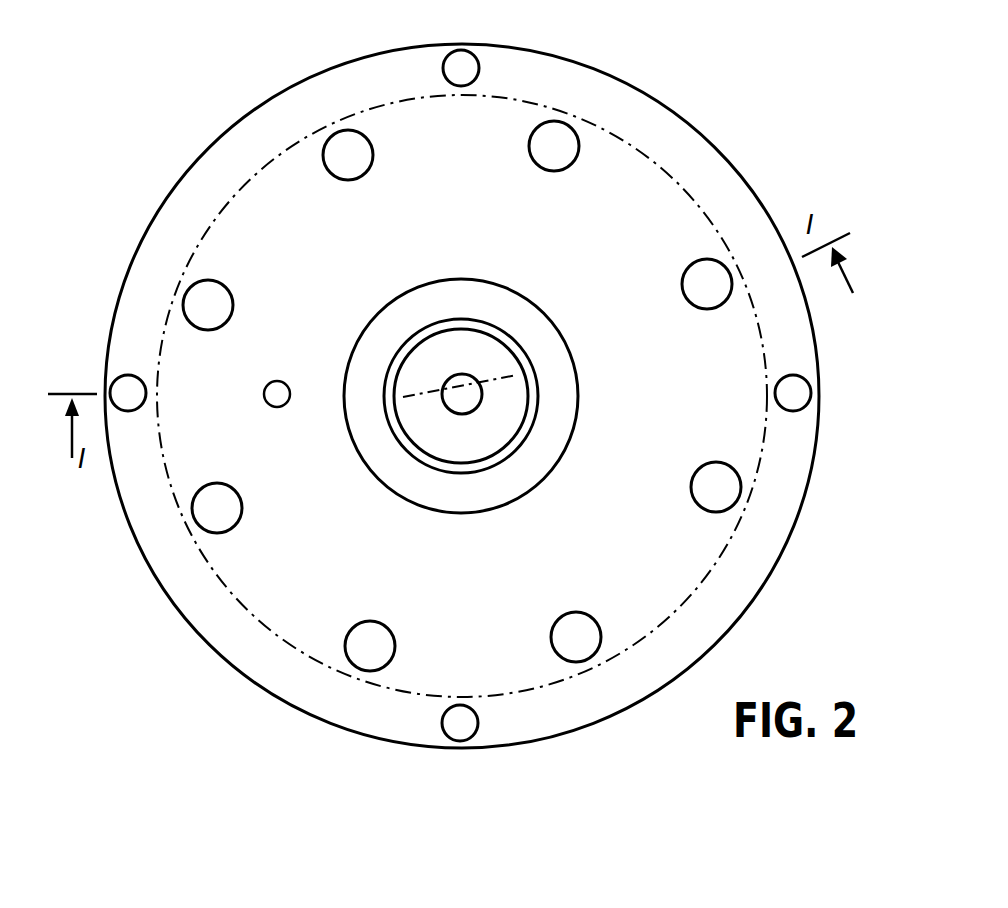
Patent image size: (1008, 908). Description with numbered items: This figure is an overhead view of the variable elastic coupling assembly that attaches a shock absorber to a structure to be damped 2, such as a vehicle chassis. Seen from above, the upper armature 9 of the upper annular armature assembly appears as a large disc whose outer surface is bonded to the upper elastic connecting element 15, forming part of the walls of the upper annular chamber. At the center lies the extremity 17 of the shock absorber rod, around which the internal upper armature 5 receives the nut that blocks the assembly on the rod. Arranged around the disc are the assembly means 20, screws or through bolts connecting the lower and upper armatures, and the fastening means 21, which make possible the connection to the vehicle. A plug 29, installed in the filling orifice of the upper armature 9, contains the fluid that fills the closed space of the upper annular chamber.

The structure to be damped 2 is at (683, 182).
The internal upper armature 5 is at (498, 336).
The upper armature 9 is at (480, 213).
The upper elastic connecting element 15 is at (503, 487).
The extremity of the rod 17 is at (467, 403).
The assembly means 20 is at (343, 140).
The fastening means 21 is at (462, 62).
The plug 29 is at (276, 396).